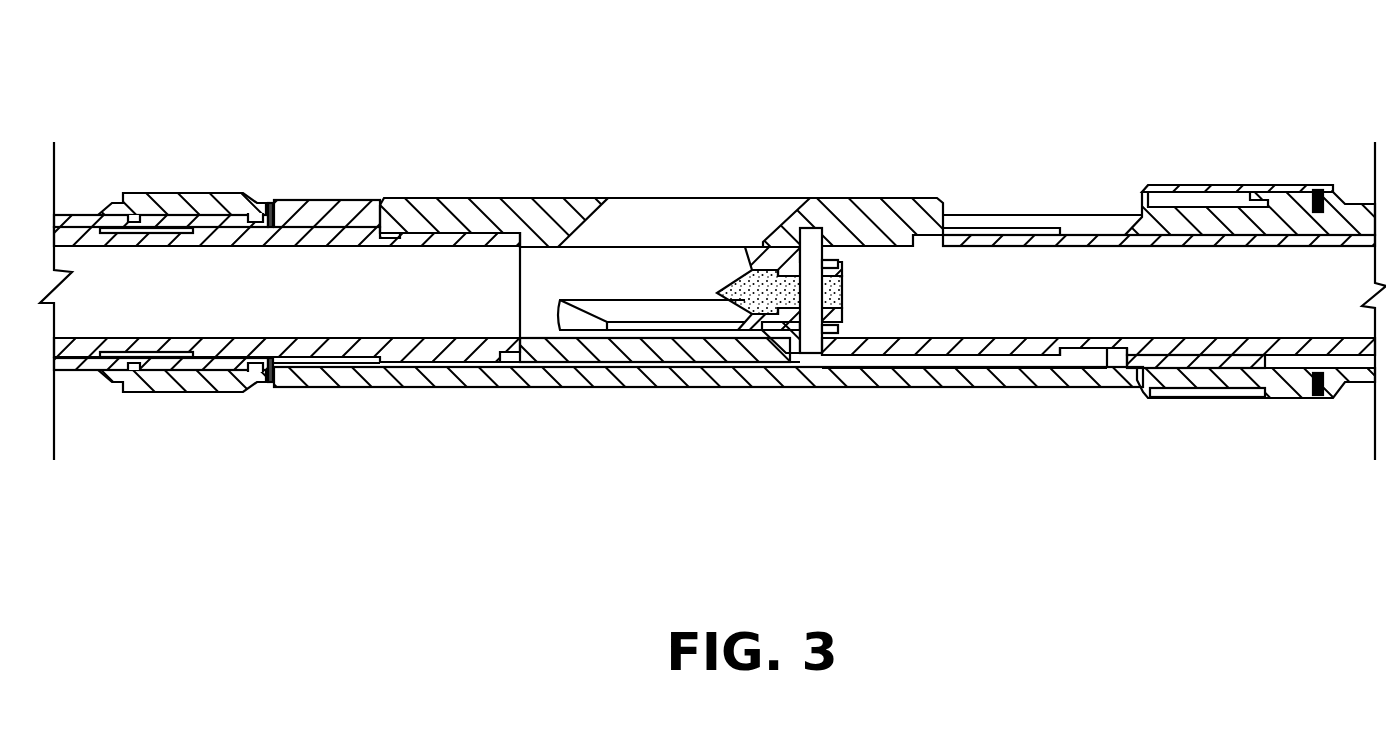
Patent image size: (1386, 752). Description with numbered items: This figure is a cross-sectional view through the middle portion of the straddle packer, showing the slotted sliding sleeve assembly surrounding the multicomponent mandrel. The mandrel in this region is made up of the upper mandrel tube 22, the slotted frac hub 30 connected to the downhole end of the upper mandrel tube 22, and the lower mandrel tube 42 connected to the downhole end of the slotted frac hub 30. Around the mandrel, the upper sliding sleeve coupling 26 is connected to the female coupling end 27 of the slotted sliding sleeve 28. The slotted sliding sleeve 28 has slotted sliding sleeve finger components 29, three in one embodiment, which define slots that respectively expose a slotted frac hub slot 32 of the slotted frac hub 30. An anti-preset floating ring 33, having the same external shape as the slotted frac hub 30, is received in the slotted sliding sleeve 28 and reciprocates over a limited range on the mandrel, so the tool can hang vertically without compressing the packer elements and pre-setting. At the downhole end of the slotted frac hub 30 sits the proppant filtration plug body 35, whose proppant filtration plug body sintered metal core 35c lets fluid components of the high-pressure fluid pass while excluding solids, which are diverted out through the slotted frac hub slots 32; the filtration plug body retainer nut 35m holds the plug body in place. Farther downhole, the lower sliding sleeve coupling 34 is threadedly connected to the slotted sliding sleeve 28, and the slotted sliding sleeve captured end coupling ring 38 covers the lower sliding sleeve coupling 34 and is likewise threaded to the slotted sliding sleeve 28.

The upper mandrel tube 22 is at (298, 345).
The upper sliding sleeve coupling 26 is at (75, 213).
The female coupling end 27 is at (175, 203).
The slotted sliding sleeve 28 is at (260, 196).
The slotted sliding sleeve finger components 29 is at (572, 378).
The slotted frac hub 30 is at (514, 202).
The slotted frac hub slot 32 is at (695, 215).
The anti-preset floating ring 33 is at (340, 198).
The lower sliding sleeve coupling 34 is at (1283, 370).
The proppant filtration plug body 35 is at (764, 240).
The proppant filtration plug body sintered metal core 35c is at (843, 290).
The filtration plug body retainer nut 35m is at (813, 328).
The slotted sliding sleeve captured end coupling ring 38 is at (1223, 188).
The lower mandrel tube 42 is at (1107, 368).